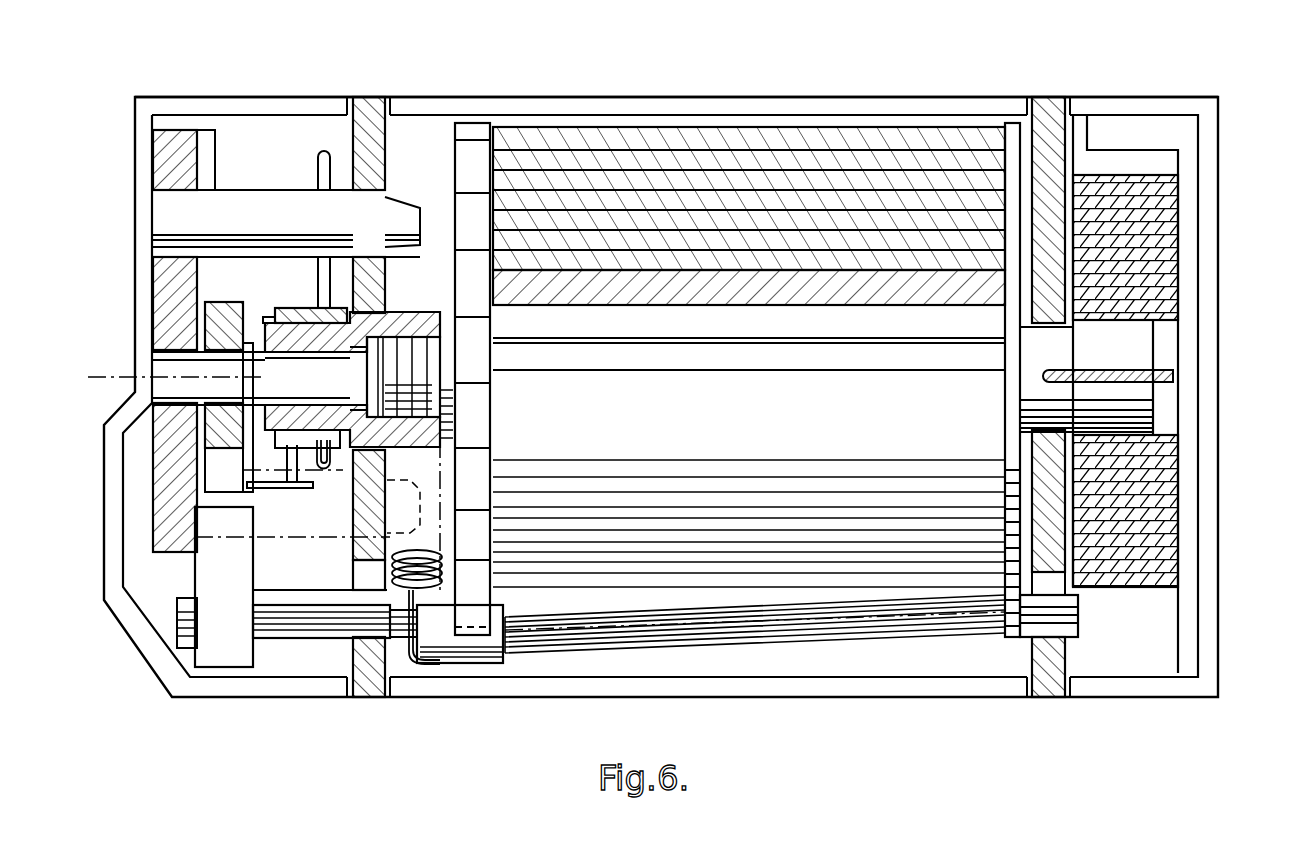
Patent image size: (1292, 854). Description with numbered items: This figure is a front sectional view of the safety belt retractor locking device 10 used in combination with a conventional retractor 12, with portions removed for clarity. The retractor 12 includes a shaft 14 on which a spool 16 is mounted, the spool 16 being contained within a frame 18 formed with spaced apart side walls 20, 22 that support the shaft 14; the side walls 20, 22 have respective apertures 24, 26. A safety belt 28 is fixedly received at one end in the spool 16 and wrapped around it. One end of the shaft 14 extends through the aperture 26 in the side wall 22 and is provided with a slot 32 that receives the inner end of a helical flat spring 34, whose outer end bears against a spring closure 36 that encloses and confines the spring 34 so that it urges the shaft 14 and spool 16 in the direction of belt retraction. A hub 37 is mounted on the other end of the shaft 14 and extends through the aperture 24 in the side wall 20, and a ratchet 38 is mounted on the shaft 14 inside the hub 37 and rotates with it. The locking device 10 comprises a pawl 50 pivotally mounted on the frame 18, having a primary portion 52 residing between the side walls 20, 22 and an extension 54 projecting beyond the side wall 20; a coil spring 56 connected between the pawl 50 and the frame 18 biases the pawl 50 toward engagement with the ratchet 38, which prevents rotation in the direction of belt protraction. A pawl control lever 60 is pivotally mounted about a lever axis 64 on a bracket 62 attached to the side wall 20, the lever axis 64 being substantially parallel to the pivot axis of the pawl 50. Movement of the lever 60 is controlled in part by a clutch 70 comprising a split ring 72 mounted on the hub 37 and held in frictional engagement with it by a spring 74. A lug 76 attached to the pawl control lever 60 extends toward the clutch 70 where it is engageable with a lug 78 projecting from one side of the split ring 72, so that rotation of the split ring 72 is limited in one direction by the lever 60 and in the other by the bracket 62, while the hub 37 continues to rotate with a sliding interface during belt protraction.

The safety belt retractor locking device 10 is at (208, 76).
The retractor 12 is at (873, 86).
The shaft 14 is at (751, 335).
The spool 16 is at (793, 296).
The frame 18 is at (488, 66).
The side wall 20 is at (381, 97).
The side wall 22 is at (1055, 97).
The aperture 24 is at (402, 310).
The aperture 26 is at (1040, 330).
The safety belt 28 is at (708, 128).
The slot 32 is at (1180, 385).
The helical flat spring 34 is at (1178, 275).
The spring closure 36 is at (1190, 100).
The hub 37 is at (425, 310).
The ratchet 38 is at (455, 146).
The pawl 50 is at (485, 665).
The primary portion 52 is at (522, 655).
The extension 54 is at (302, 627).
The coil spring 56 is at (392, 578).
The pawl control lever 60 is at (242, 290).
The bracket 62 is at (153, 480).
The lever axis 64 is at (110, 378).
The clutch 70 is at (305, 289).
The split ring 72 is at (293, 296).
The spring 74 is at (318, 153).
The lug 76 is at (265, 482).
The lug 78 is at (287, 454).